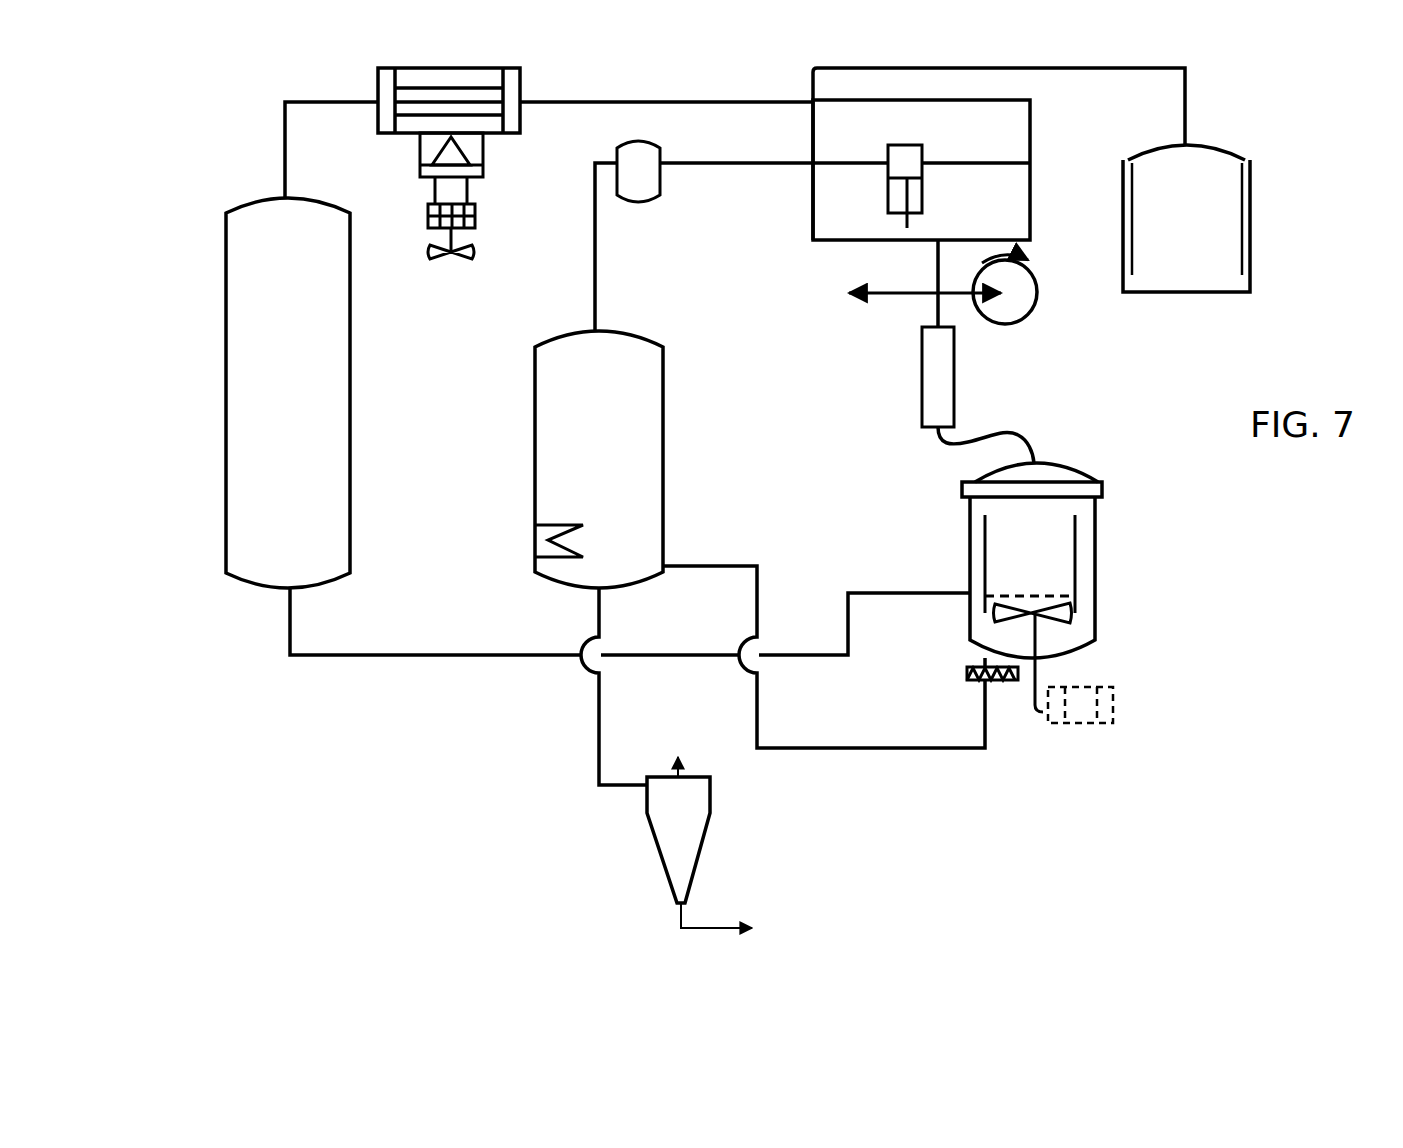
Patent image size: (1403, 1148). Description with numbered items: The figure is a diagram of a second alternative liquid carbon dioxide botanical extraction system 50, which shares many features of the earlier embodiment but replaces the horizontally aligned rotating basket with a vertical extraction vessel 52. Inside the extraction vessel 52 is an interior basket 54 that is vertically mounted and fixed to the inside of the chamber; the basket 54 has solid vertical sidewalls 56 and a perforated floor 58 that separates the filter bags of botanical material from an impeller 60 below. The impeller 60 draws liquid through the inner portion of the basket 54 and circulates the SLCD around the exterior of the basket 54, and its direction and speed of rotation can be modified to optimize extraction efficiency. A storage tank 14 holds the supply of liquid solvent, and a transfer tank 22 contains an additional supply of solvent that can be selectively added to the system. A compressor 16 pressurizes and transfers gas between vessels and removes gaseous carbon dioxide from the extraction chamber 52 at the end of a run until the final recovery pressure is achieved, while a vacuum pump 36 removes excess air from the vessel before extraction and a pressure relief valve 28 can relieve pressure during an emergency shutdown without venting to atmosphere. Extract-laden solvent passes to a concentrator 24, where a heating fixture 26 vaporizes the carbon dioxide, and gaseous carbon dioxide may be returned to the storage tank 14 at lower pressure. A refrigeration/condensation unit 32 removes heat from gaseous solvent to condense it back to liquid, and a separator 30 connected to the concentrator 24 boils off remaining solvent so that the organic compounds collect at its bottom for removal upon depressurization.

The second alternative extraction system 50 is at (430, 735).
The storage tank 14 is at (352, 368).
The refrigeration/condensation unit 32 is at (484, 222).
The concentrator 24 is at (665, 378).
The heating fixture 26 is at (552, 523).
The compressor 16 is at (922, 188).
The pressure relief valve 28 is at (912, 290).
The vacuum pump 36 is at (1028, 318).
The transfer tank 22 is at (1222, 293).
The extraction vessel 52 is at (966, 540).
The interior basket 54 is at (1079, 548).
The solid vertical sidewalls 56 is at (1072, 548).
The perforated floor 58 is at (1058, 595).
The impeller 60 is at (1073, 618).
The separator 30 is at (705, 835).